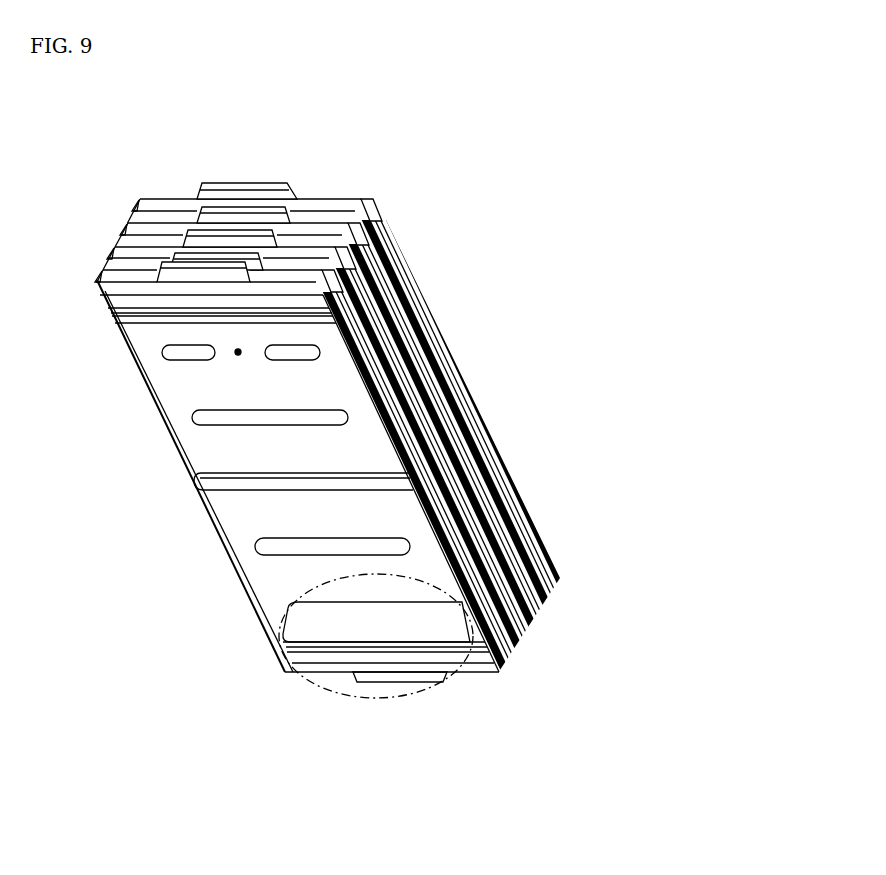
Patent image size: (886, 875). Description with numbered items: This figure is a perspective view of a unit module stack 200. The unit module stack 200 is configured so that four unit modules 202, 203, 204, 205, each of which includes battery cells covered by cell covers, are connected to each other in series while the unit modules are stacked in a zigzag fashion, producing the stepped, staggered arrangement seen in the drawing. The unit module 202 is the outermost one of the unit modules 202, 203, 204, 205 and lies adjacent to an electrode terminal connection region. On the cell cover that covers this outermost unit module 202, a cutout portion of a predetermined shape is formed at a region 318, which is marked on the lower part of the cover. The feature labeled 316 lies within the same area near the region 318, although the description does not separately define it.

The unit module stack 200 is at (58, 149).
The unit module 202 is at (242, 532).
The unit module 203 is at (533, 627).
The unit module 204 is at (493, 490).
The unit module 205 is at (453, 360).
The sealing pad 316 is at (283, 612).
The region 318 is at (443, 690).